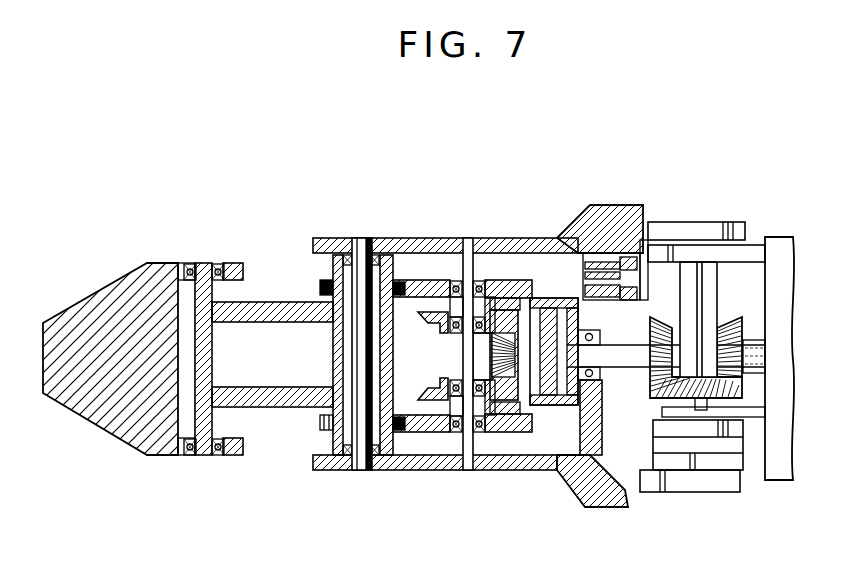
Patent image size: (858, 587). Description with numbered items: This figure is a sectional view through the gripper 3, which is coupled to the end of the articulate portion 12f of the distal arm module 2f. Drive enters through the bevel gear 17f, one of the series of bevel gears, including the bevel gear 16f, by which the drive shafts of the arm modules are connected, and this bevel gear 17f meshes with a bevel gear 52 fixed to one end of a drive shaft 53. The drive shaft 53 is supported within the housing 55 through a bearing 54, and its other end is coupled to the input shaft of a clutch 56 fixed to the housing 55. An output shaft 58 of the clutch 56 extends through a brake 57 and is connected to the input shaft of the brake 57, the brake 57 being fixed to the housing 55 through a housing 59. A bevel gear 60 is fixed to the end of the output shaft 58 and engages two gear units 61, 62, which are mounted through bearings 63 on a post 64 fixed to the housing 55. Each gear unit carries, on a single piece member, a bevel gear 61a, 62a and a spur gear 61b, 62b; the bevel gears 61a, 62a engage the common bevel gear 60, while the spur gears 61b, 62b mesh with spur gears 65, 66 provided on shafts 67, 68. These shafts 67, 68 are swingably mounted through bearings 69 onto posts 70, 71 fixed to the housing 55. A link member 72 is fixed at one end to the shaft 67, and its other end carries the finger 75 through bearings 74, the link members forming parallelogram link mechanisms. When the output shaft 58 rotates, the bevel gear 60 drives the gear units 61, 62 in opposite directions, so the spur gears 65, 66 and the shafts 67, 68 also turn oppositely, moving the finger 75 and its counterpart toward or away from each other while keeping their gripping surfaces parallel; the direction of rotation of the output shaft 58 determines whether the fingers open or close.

The distal arm module 2f is at (785, 238).
The gripper 3 is at (447, 236).
The articulate portion 12f is at (695, 225).
The bevel gear 16f is at (729, 328).
The bevel gear 17f is at (745, 383).
The bevel gear 52 is at (663, 322).
The drive shaft 53 is at (612, 352).
The bearing 54 is at (600, 378).
The housing 55 is at (503, 282).
The clutch 56 is at (585, 430).
The brake 57 is at (537, 410).
The output shaft 58 is at (518, 308).
The housing 59 is at (549, 298).
The bevel gear 60 is at (490, 350).
The gear unit 61 is at (414, 433).
The bevel gear 61a is at (447, 388).
The spur gear 61b is at (408, 435).
The gear unit 62 is at (428, 302).
The bevel gear 62a is at (492, 300).
The spur gear 62b is at (388, 258).
The bearings 63 is at (470, 462).
The post 64 is at (458, 433).
The spur gear 65 is at (320, 424).
The spur gear 66 is at (320, 286).
The shaft 67 is at (311, 393).
The shaft 68 is at (333, 440).
The bearings 69 is at (345, 255).
The post 70 is at (378, 382).
The post 71 is at (364, 470).
The link member 72 is at (272, 407).
The bearings 74 is at (188, 265).
The finger 75 is at (73, 305).